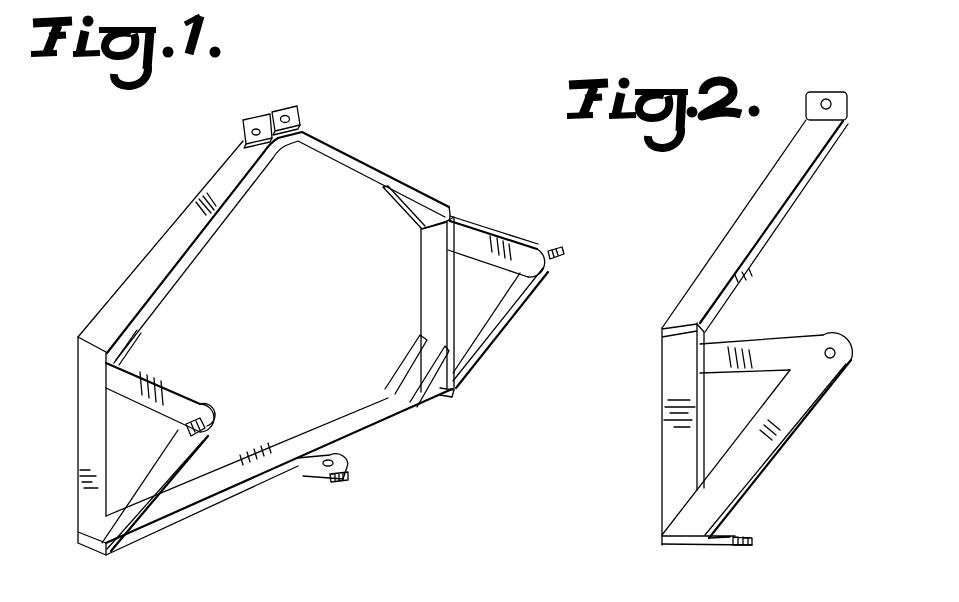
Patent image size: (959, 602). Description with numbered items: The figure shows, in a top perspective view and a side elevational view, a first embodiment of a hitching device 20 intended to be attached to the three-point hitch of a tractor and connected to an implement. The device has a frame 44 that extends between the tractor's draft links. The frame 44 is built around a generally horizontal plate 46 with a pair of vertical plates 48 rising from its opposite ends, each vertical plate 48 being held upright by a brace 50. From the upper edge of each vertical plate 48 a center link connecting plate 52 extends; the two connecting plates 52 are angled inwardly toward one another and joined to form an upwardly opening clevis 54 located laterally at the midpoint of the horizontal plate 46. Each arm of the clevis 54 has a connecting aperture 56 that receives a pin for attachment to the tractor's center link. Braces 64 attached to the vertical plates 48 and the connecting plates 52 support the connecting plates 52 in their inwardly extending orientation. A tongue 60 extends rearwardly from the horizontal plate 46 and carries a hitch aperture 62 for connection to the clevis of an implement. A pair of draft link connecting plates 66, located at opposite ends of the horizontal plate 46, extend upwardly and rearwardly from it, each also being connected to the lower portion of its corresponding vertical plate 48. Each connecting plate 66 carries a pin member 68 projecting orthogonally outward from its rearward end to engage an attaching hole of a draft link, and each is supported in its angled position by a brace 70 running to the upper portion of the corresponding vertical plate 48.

In FIG. 1, the hitching device 20 is at (350, 103).
In FIG. 2, the hitching device 20 is at (711, 200).
In FIG. 1, the frame 44 is at (213, 505).
In FIG. 2, the frame 44 is at (661, 513).
In FIG. 1, the horizontal plate 46 is at (362, 407).
In FIG. 2, the horizontal plate 46 is at (680, 546).
In FIG. 1, the vertical plate 48 is at (432, 282).
In FIG. 2, the vertical plate 48 is at (667, 427).
In FIG. 1, the brace 50 is at (434, 393).
In FIG. 1, the center link connecting plate 52 is at (167, 245).
In FIG. 2, the center link connecting plate 52 is at (732, 247).
In FIG. 1, the clevis 54 is at (272, 104).
In FIG. 2, the clevis 54 is at (850, 105).
In FIG. 1, the connecting aperture 56 is at (253, 133).
In FIG. 2, the connecting aperture 56 is at (827, 97).
In FIG. 1, the tongue 60 is at (330, 481).
In FIG. 2, the tongue 60 is at (755, 543).
In FIG. 1, the hitch aperture 62 is at (347, 462).
In FIG. 1, the brace 64 is at (440, 213).
In FIG. 1, the draft link connecting plate 66 is at (502, 328).
In FIG. 2, the draft link connecting plate 66 is at (782, 428).
In FIG. 1, the pin member 68 is at (557, 247).
In FIG. 2, the pin member 68 is at (835, 351).
In FIG. 1, the brace 70 is at (494, 246).
In FIG. 2, the brace 70 is at (762, 348).